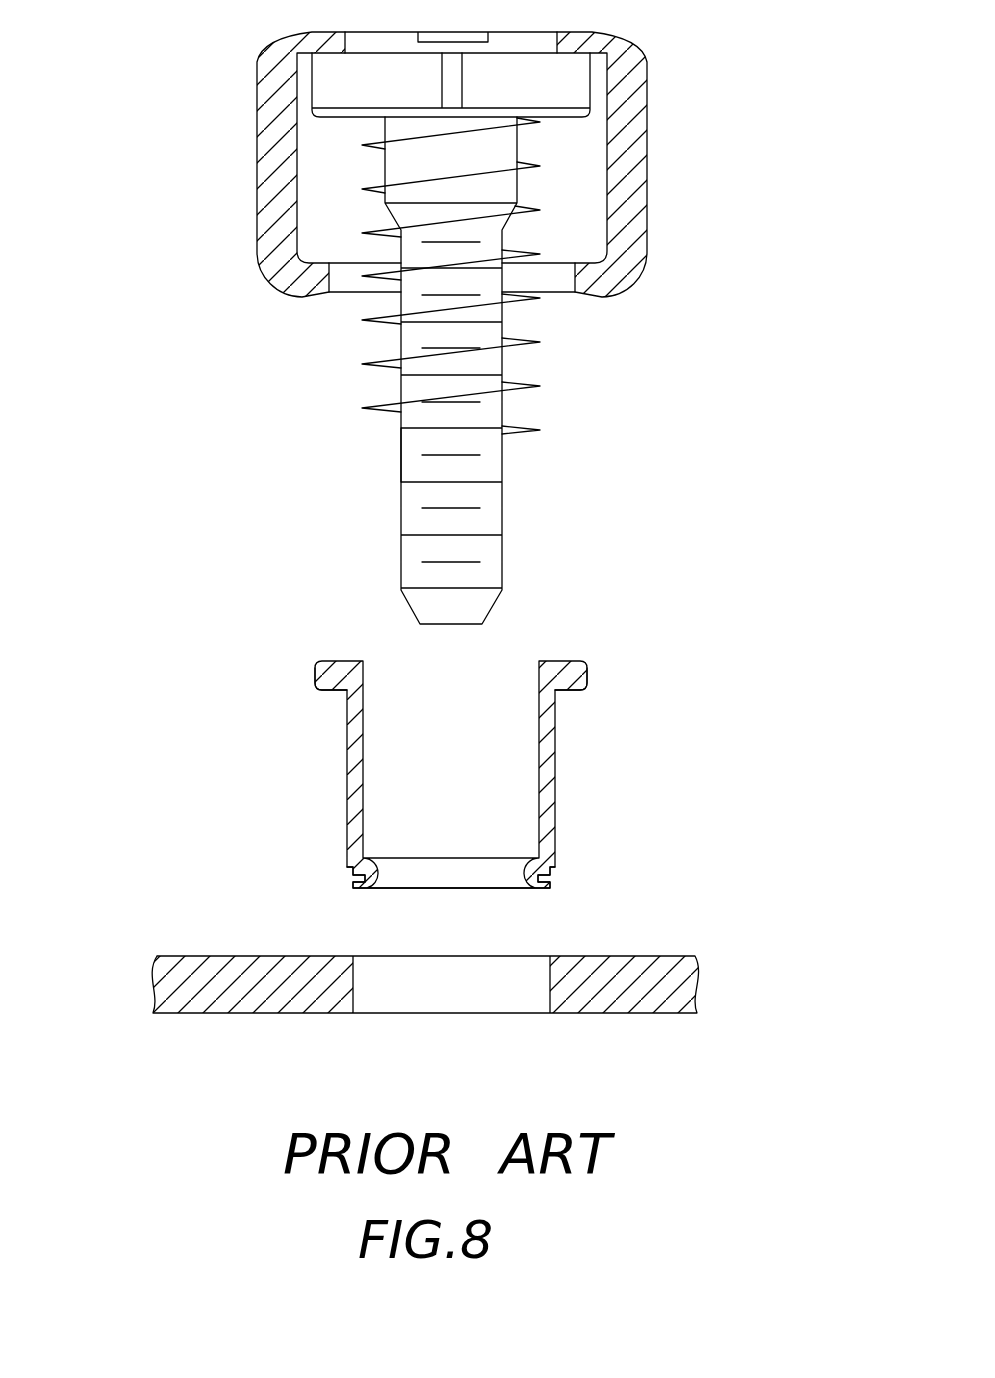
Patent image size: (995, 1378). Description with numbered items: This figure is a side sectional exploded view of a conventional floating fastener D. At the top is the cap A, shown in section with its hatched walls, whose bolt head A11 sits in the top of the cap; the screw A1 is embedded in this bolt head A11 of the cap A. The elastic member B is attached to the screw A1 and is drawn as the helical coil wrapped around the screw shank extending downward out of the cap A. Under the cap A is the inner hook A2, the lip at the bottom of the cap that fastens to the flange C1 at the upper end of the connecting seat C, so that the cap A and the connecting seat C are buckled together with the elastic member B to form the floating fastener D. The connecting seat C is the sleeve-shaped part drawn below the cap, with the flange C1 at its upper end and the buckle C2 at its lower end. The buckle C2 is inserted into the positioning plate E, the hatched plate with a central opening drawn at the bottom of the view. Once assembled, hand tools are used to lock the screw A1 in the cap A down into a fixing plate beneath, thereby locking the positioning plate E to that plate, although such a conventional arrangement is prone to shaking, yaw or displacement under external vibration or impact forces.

The cap A is at (623, 150).
The bolt head A11 is at (575, 85).
The inner hook A2 is at (575, 273).
The screw A1 is at (403, 439).
The elastic member B is at (518, 390).
The connecting seat C is at (548, 767).
The flange C1 is at (325, 667).
The buckle C2 is at (523, 870).
The floating fastener D is at (241, 556).
The positioning plate E is at (165, 995).